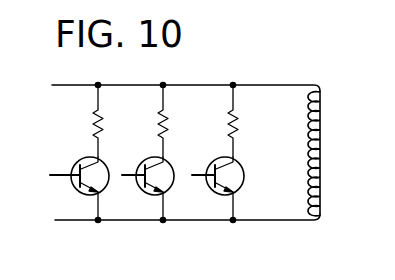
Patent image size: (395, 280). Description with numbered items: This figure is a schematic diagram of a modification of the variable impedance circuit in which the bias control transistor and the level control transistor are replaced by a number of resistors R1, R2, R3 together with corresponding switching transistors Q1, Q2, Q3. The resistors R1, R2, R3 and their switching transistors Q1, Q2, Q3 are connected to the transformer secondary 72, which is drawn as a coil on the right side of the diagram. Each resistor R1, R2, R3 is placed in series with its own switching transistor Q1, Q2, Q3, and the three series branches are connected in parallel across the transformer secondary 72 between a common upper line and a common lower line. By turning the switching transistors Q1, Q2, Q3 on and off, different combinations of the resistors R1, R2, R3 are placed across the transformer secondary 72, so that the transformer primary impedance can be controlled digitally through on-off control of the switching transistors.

The resistor R1 is at (93, 127).
The resistor R2 is at (158, 127).
The resistor R3 is at (228, 127).
The switching transistor Q1 is at (77, 190).
The switching transistor Q2 is at (148, 190).
The switching transistor Q3 is at (222, 190).
The transformer secondary 72 is at (322, 156).